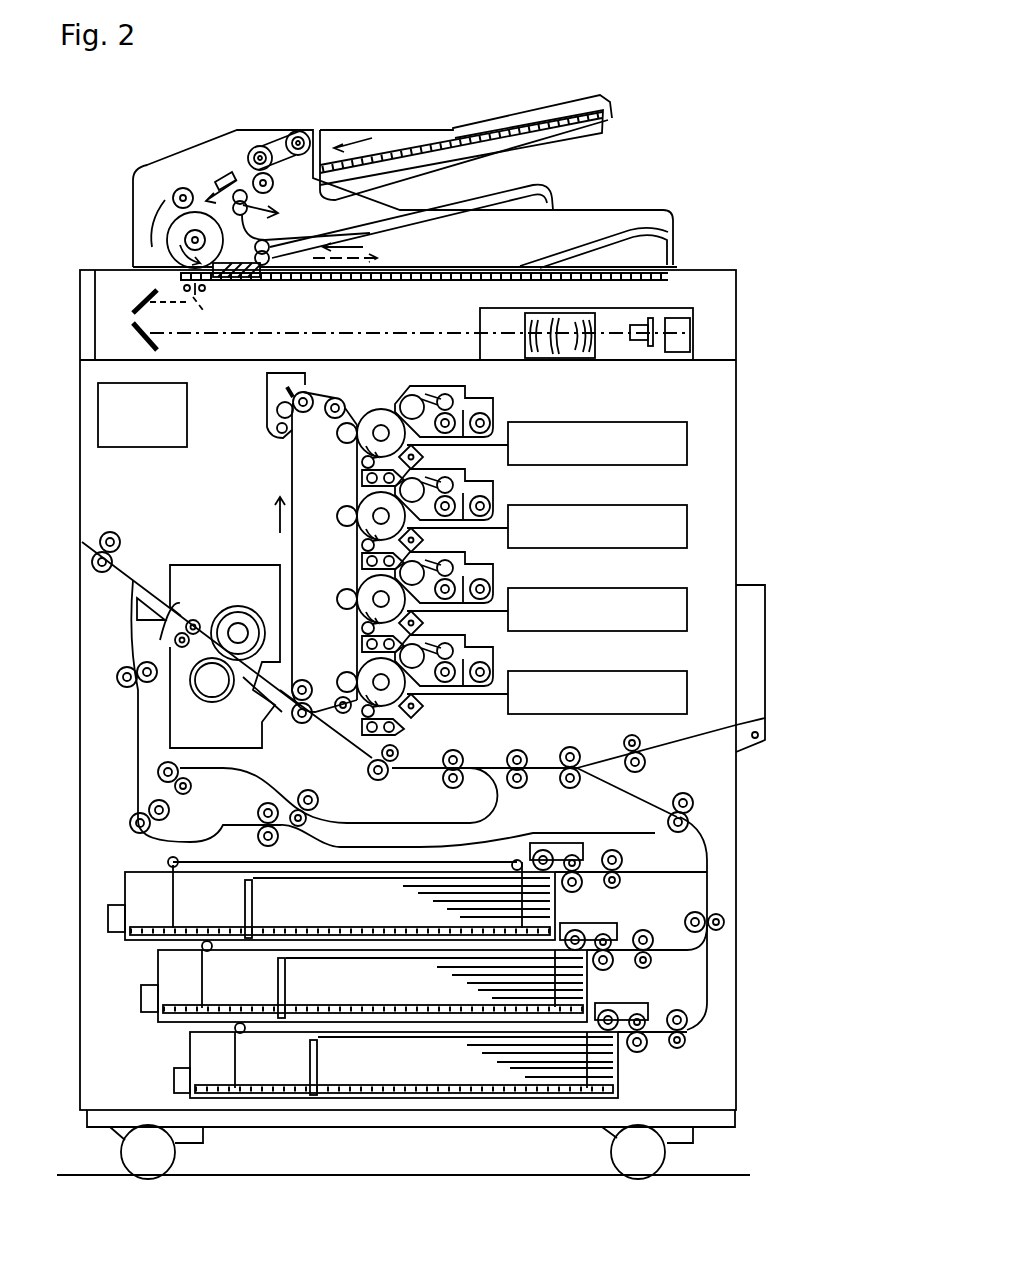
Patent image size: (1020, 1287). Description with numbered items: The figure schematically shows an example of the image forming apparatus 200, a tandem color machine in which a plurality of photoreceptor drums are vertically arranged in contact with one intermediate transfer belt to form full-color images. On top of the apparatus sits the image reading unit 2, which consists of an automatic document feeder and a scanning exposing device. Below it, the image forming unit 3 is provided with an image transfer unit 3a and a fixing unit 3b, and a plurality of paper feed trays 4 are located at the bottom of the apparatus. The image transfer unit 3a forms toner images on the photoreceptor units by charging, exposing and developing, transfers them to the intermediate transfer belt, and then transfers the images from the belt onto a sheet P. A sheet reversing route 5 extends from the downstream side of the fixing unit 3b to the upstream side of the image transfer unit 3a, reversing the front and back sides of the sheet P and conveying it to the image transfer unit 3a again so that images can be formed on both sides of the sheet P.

The image forming apparatus 200 is at (477, 94).
The image reading unit 2 is at (754, 198).
The image forming unit 3 is at (238, 478).
The image transfer unit 3a is at (460, 729).
The fixing unit 3b is at (211, 548).
The sheet reversing route 5 is at (340, 835).
The paper feed trays 4 is at (190, 1048).
The sheet P is at (482, 885).